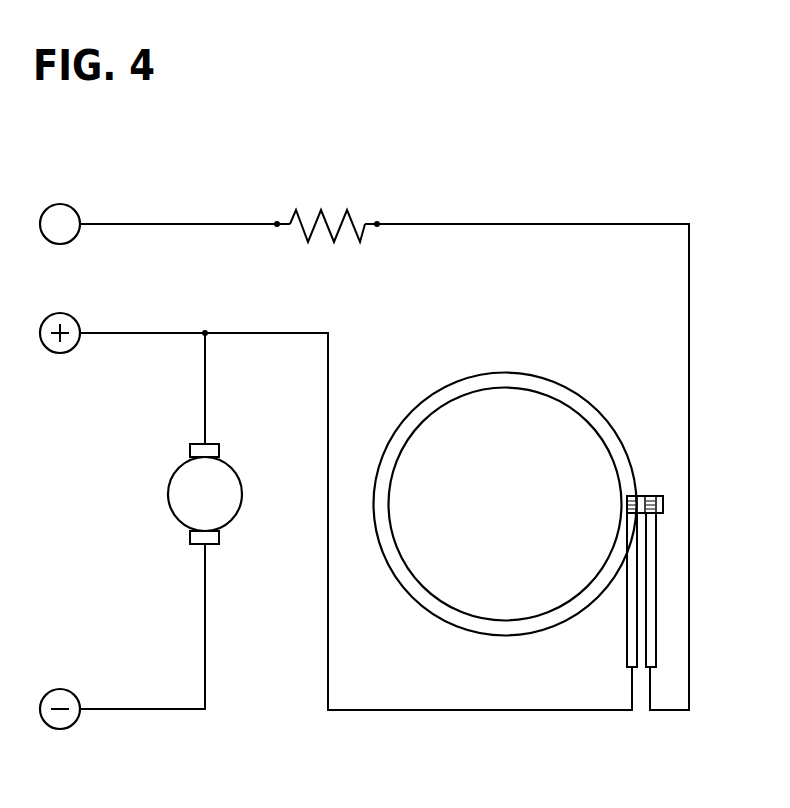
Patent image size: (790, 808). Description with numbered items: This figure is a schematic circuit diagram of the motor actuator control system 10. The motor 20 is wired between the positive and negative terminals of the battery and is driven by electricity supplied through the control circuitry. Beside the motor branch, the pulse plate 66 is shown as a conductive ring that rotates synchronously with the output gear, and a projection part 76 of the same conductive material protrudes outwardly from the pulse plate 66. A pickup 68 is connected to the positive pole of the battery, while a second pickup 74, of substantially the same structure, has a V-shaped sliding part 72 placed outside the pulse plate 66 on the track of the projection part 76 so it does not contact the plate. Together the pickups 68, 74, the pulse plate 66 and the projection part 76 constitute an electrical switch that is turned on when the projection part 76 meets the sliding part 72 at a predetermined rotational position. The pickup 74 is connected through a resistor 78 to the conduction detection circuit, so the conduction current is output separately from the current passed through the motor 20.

The motor actuator control system 10 is at (469, 142).
The motor 20 is at (180, 510).
The pulse plate 66 is at (478, 375).
The pickup 68 is at (627, 655).
The sliding part 72 is at (648, 497).
The pickup 74 is at (651, 654).
The projection part 76 is at (663, 505).
The resistor 78 is at (308, 242).